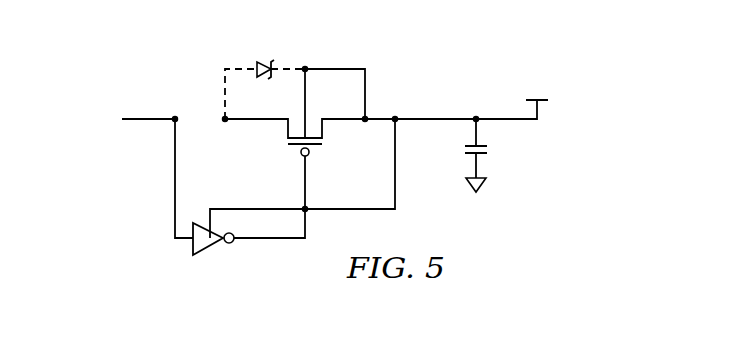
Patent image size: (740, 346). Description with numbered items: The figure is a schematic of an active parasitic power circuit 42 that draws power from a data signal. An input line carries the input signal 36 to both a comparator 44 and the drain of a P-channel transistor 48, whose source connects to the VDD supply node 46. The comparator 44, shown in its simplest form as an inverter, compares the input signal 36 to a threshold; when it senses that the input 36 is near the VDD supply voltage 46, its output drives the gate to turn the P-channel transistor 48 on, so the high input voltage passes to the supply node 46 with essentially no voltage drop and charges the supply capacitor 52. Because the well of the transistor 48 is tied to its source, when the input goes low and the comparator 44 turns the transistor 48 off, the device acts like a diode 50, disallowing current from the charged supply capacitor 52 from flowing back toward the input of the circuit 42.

The input signal 36 is at (156, 118).
The parasitic power circuit 42 is at (98, 215).
The comparator 44 is at (211, 245).
The VDD supply node 46 is at (495, 117).
The P-channel transistor 48 is at (296, 147).
The diode 50 is at (270, 61).
The supply capacitor 52 is at (462, 149).